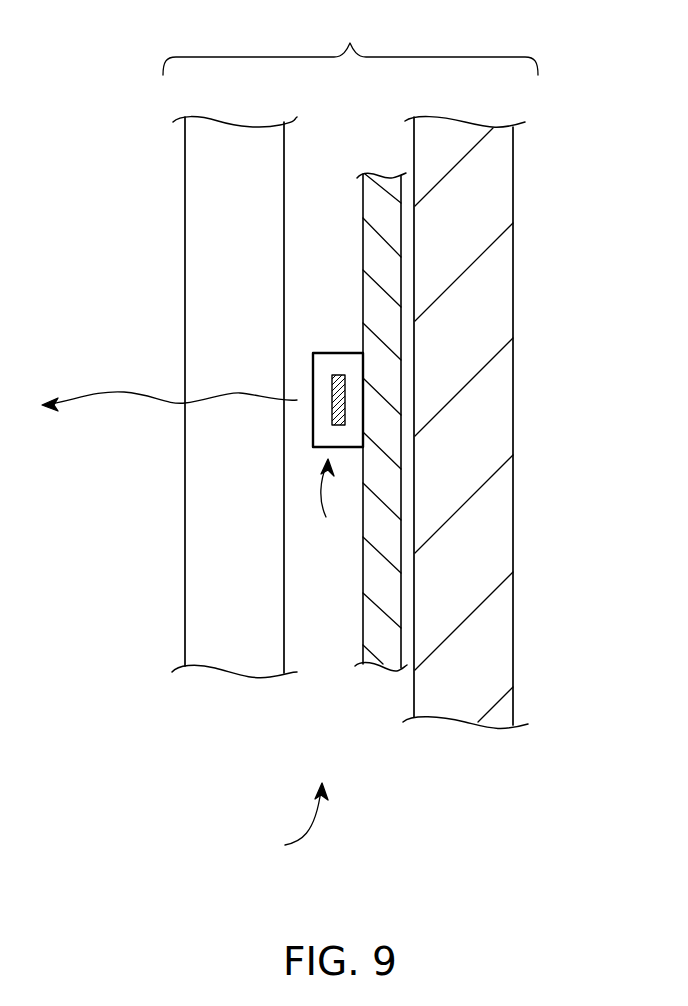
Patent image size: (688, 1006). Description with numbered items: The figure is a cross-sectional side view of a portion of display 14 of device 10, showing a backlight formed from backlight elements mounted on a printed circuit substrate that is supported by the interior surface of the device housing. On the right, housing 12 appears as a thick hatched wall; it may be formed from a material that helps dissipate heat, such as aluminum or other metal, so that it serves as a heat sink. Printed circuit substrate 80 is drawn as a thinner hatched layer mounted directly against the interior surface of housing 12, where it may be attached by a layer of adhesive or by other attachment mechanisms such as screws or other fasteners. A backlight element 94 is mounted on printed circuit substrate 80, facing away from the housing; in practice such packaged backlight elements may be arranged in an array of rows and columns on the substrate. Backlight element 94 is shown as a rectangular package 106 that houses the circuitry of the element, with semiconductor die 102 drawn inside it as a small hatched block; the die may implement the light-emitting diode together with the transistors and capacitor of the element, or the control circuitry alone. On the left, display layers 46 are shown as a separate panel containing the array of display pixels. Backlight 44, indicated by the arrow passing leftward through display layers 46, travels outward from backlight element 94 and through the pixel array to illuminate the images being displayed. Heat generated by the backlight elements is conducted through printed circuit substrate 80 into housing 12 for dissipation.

The device 10 is at (291, 822).
The housing 12 is at (493, 299).
The display 14 is at (350, 44).
The backlight 44 is at (122, 392).
The display layers 46 is at (232, 648).
The printed circuit substrate 80 is at (372, 190).
The backlight element 94 is at (327, 503).
The semiconductor die 102 is at (337, 375).
The package 106 is at (322, 353).